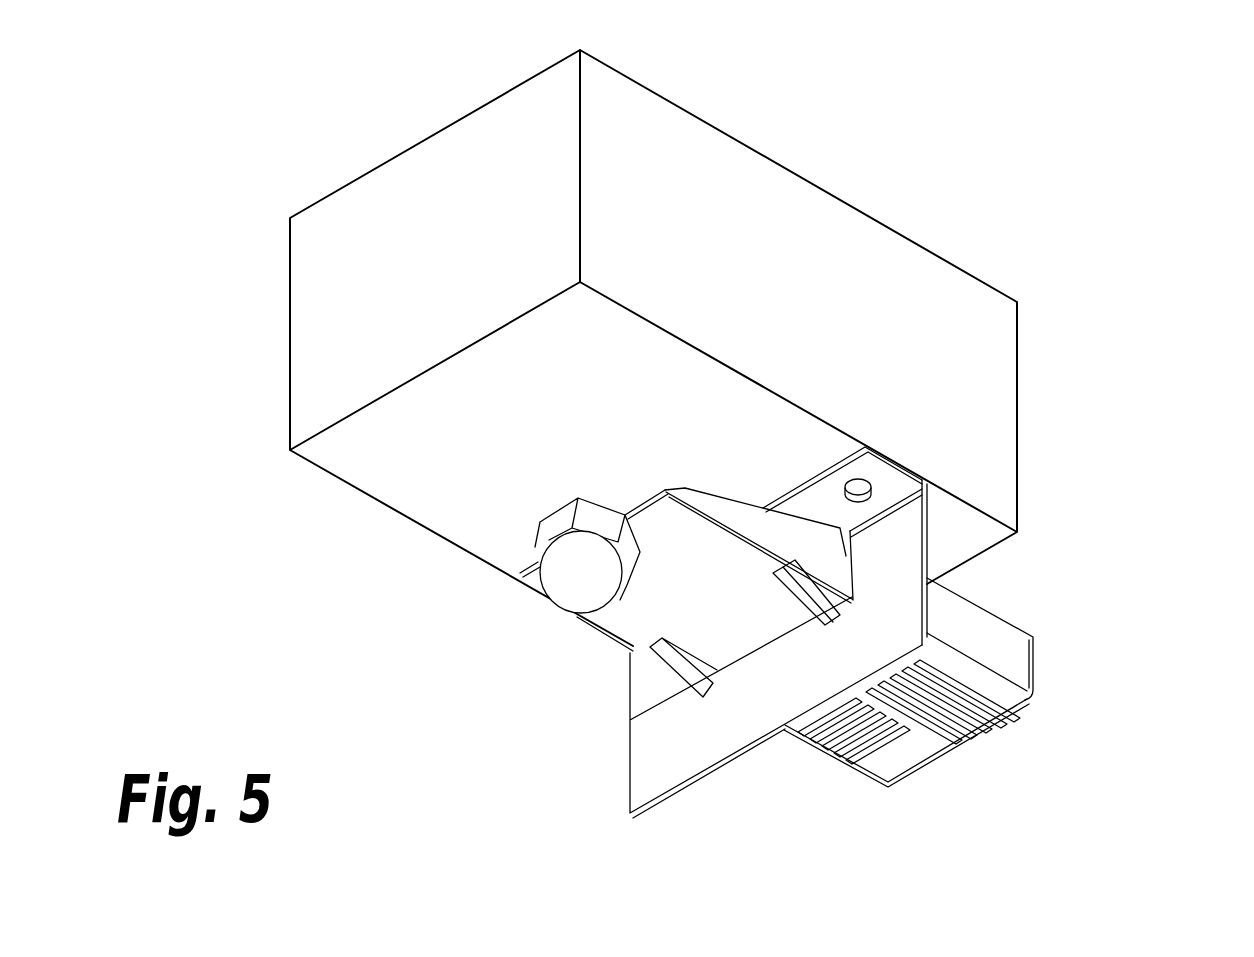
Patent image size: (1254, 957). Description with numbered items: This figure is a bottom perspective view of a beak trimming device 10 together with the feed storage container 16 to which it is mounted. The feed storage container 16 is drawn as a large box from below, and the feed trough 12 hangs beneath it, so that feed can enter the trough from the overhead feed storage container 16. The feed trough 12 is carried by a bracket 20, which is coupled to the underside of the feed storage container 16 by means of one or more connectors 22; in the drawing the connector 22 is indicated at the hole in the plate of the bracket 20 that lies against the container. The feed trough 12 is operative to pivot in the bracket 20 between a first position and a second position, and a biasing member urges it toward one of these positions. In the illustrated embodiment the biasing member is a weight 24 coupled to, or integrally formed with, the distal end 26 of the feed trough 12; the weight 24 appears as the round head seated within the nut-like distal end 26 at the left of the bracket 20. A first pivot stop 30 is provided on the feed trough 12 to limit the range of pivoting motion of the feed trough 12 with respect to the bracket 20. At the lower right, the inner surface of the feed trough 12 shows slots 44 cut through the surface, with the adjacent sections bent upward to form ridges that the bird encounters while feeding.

The beak trimming device 10 is at (1110, 783).
The feed trough 12 is at (793, 733).
The feed storage container 16 is at (1020, 350).
The bracket 20 is at (630, 695).
The connector 22 is at (868, 482).
The weight 24 is at (562, 614).
The distal end 26 is at (550, 497).
The first pivot stop 30 is at (797, 612).
The slot 44 is at (857, 752).